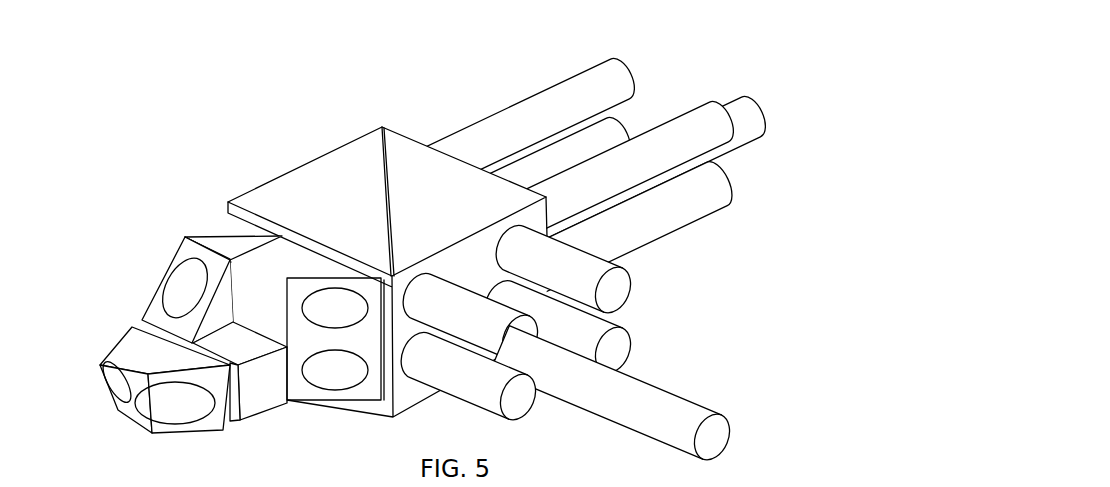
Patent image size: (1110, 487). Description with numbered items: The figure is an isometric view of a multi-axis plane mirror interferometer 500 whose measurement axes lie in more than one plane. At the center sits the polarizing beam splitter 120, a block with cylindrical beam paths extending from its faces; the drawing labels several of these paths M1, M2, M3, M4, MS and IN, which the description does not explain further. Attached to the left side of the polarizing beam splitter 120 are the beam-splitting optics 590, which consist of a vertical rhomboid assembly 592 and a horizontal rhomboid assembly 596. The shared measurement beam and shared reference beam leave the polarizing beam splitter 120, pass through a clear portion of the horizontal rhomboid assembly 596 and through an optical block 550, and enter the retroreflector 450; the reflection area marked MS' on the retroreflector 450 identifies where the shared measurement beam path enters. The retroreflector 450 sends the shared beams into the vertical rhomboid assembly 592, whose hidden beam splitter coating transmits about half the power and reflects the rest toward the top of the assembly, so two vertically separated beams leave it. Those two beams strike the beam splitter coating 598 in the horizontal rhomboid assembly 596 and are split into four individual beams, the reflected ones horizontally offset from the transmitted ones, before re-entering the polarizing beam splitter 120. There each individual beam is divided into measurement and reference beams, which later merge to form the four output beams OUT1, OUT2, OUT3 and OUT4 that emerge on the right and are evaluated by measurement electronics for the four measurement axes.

The multi-axis interferometer 500 is at (177, 72).
The polarizing beam splitter 120 is at (280, 194).
The beam-splitting optics 590 is at (126, 223).
The beam splitter coating 598 is at (206, 236).
The vertical rhomboid assembly 592 is at (157, 310).
The retroreflector 450 is at (169, 430).
The optical block 550 is at (256, 397).
The horizontal rhomboid assembly 596 is at (304, 398).
The shared measurement beam path MS' is at (175, 403).
The mirror M3 cylinder M3 is at (556, 87).
The mirror M1 cylinder M1 is at (609, 127).
The mirror M4 cylinder M4 is at (687, 113).
The mirror MS cylinder MS is at (626, 177).
The mirror M2 cylinder M2 is at (689, 222).
The output beam OUT3 is at (617, 291).
The output beam OUT1 is at (619, 352).
The output beam OUT4 is at (524, 342).
The output beam OUT2 is at (521, 402).
The input port IN is at (697, 406).